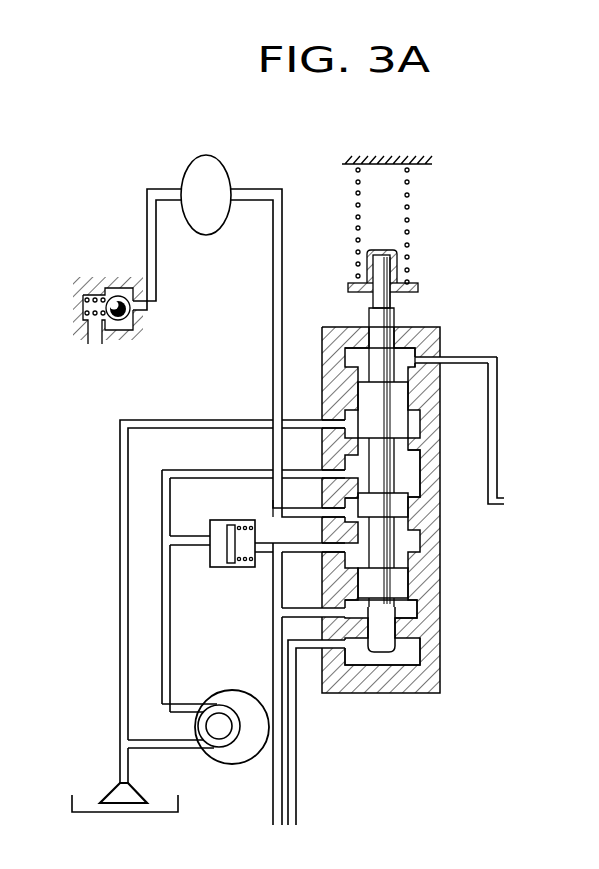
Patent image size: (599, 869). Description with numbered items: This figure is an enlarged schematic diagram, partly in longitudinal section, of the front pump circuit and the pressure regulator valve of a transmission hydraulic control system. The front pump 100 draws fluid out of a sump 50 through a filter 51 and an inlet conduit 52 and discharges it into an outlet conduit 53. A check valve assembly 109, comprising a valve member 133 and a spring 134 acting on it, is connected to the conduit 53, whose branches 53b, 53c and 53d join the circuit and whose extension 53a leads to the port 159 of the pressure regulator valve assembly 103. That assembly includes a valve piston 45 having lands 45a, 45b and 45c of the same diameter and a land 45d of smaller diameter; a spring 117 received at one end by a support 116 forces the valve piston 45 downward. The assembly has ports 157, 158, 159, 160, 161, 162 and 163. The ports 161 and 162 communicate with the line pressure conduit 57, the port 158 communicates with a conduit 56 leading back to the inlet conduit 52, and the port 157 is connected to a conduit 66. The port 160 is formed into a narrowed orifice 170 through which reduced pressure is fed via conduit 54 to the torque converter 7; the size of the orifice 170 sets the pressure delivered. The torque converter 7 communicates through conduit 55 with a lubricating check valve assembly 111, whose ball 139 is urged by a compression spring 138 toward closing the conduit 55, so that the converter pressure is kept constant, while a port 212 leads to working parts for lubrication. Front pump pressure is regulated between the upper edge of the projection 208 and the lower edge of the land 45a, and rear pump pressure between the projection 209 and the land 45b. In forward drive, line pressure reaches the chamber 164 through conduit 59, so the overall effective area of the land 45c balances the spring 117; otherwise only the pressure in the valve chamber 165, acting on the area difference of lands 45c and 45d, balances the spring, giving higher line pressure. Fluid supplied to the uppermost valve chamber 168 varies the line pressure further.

The torque converter 7 is at (214, 155).
The lubricating check valve assembly 111 is at (84, 307).
The compression spring 138 is at (92, 296).
The ball 139 is at (118, 296).
The port 212 is at (86, 341).
The conduit 55 is at (152, 248).
The conduit 54 is at (275, 293).
The conduit 56 is at (120, 556).
The outlet conduit 53 is at (162, 604).
The extension of the outlet conduit 53a is at (225, 462).
The conduit branch 53b is at (180, 537).
The conduit branch 53c is at (271, 548).
The conduit branch 53d is at (279, 608).
The valve member 133 is at (226, 548).
The spring 134 is at (238, 561).
The check valve assembly 109 is at (213, 591).
The orifice 170 is at (282, 508).
The inlet conduit 52 is at (165, 749).
The filter 51 is at (120, 806).
The sump 50 is at (162, 813).
The front pump 100 is at (232, 768).
The line pressure conduit 57 is at (274, 770).
The conduit 59 is at (290, 800).
The pressure regulator valve assembly 103 is at (469, 209).
The spring 117 is at (410, 181).
The support 116 is at (398, 262).
The valve piston 45 is at (420, 456).
The land 45a is at (406, 393).
The land 45b is at (407, 503).
The land 45c is at (407, 580).
The land 45d is at (397, 630).
The uppermost valve chamber 168 is at (410, 350).
The port 157 is at (435, 353).
The conduit 66 is at (498, 390).
The projection 208 is at (415, 450).
The projection 209 is at (356, 500).
The port 158 is at (345, 426).
The port 159 is at (345, 474).
The port 160 is at (345, 514).
The port 161 is at (345, 548).
The port 162 is at (335, 613).
The valve chamber 165 is at (418, 610).
The port 163 is at (356, 666).
The chamber 164 is at (416, 668).